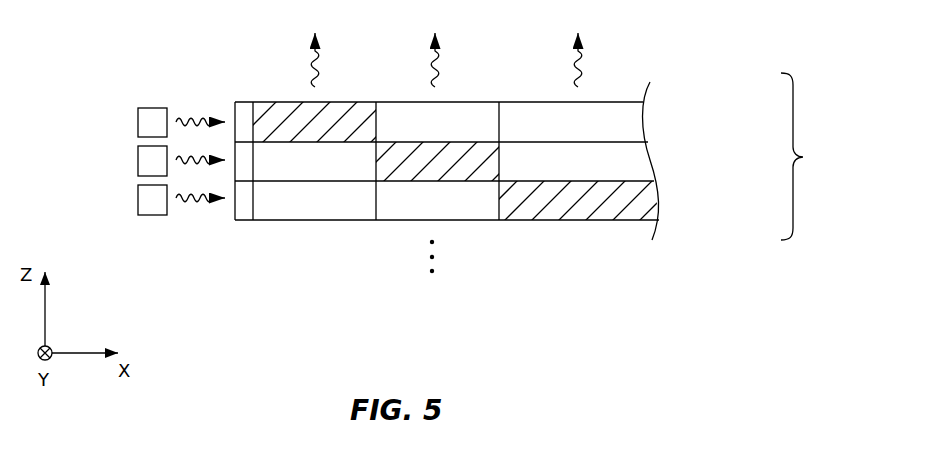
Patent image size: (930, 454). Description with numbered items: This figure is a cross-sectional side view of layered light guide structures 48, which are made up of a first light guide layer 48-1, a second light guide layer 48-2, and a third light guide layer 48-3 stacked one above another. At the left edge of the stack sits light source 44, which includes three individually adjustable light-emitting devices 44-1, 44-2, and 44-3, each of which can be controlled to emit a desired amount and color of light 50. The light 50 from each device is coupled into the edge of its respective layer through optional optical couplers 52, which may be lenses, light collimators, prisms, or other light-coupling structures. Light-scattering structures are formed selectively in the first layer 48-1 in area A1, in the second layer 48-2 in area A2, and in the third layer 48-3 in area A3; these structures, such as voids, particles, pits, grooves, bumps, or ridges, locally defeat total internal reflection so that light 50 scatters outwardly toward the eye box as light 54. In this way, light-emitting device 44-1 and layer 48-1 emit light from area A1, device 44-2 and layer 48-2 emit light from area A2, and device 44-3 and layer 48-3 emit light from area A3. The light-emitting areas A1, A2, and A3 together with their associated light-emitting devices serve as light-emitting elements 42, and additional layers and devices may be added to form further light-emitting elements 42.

The light-emitting elements 42 is at (269, 87).
The light source 44 is at (137, 204).
The light-emitting device 44-1 is at (138, 125).
The light-emitting device 44-2 is at (138, 164).
The light-emitting device 44-3 is at (138, 203).
The light guide structures 48 is at (531, 156).
The first light guide layer 48-1 is at (652, 118).
The second light guide layer 48-2 is at (663, 158).
The third light guide layer 48-3 is at (673, 197).
The light 50 is at (192, 120).
The optical couplers 52 is at (244, 87).
The light 54 is at (321, 68).
The area A1 is at (322, 128).
The area A2 is at (483, 153).
The area A3 is at (584, 183).